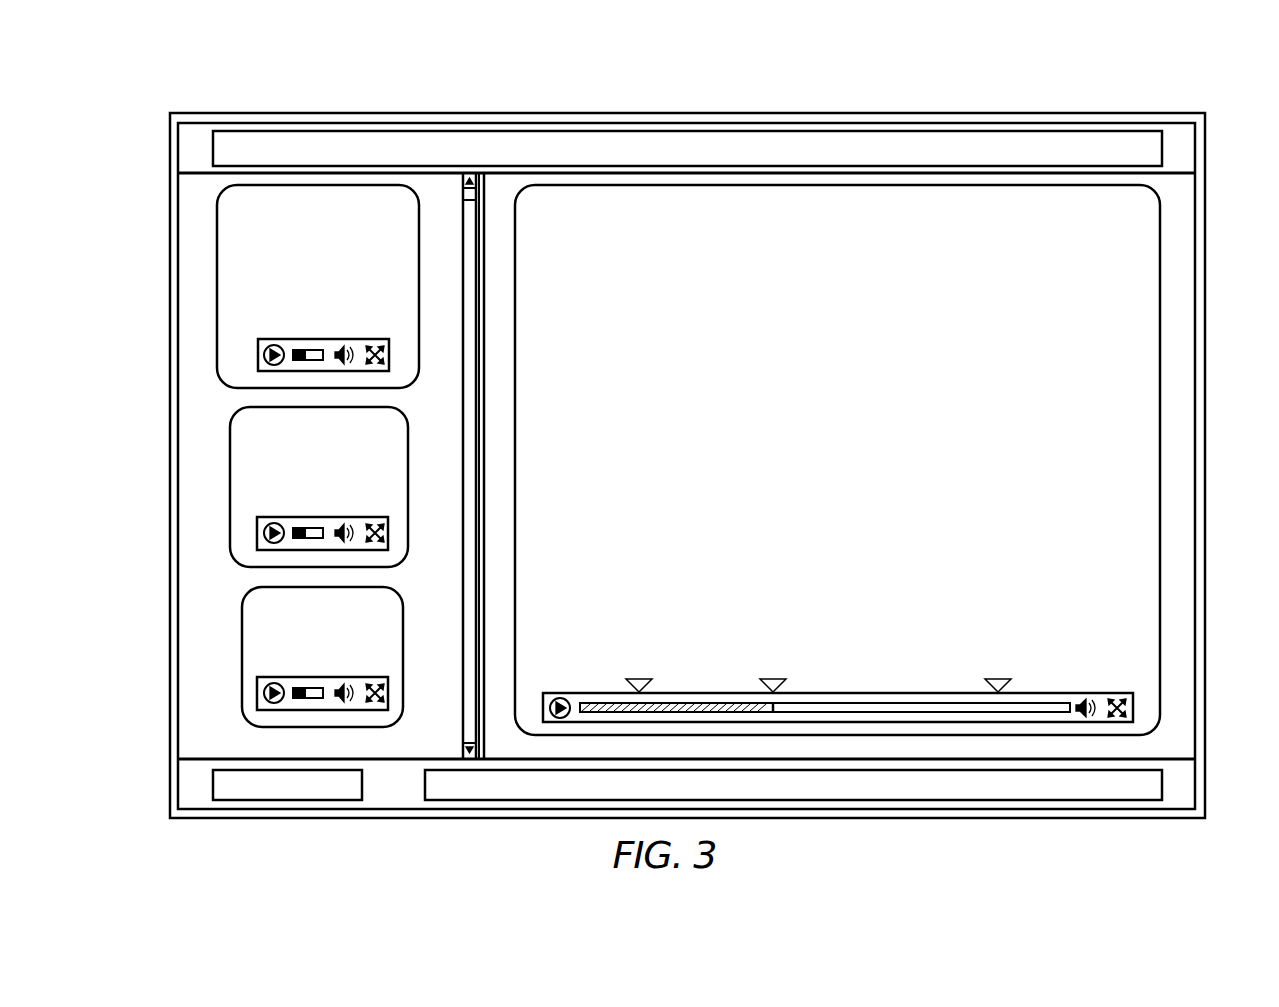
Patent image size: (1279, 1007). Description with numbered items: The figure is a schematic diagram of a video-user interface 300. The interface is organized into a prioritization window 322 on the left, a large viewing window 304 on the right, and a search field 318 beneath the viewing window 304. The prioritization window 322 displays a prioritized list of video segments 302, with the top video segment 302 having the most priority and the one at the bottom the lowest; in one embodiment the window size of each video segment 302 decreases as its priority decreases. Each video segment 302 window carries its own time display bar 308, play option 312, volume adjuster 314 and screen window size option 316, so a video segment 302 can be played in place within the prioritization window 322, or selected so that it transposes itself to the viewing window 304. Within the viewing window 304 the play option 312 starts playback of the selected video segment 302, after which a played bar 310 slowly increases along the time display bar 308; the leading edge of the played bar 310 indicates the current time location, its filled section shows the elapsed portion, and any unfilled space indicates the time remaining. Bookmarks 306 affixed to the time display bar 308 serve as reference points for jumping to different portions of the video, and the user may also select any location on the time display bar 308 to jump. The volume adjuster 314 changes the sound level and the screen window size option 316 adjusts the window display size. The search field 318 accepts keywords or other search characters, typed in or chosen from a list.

The video-user interface 300 is at (166, 95).
The video segment 302 is at (217, 286).
The viewing window 304 is at (1142, 393).
The bookmark 306 is at (639, 677).
The time display bar 308 is at (316, 349).
The played bar 310 is at (296, 348).
The play option 312 is at (258, 343).
The volume adjuster 314 is at (343, 345).
The screen window size option 316 is at (377, 364).
The search field 318 is at (446, 802).
The prioritization window 322 is at (178, 724).